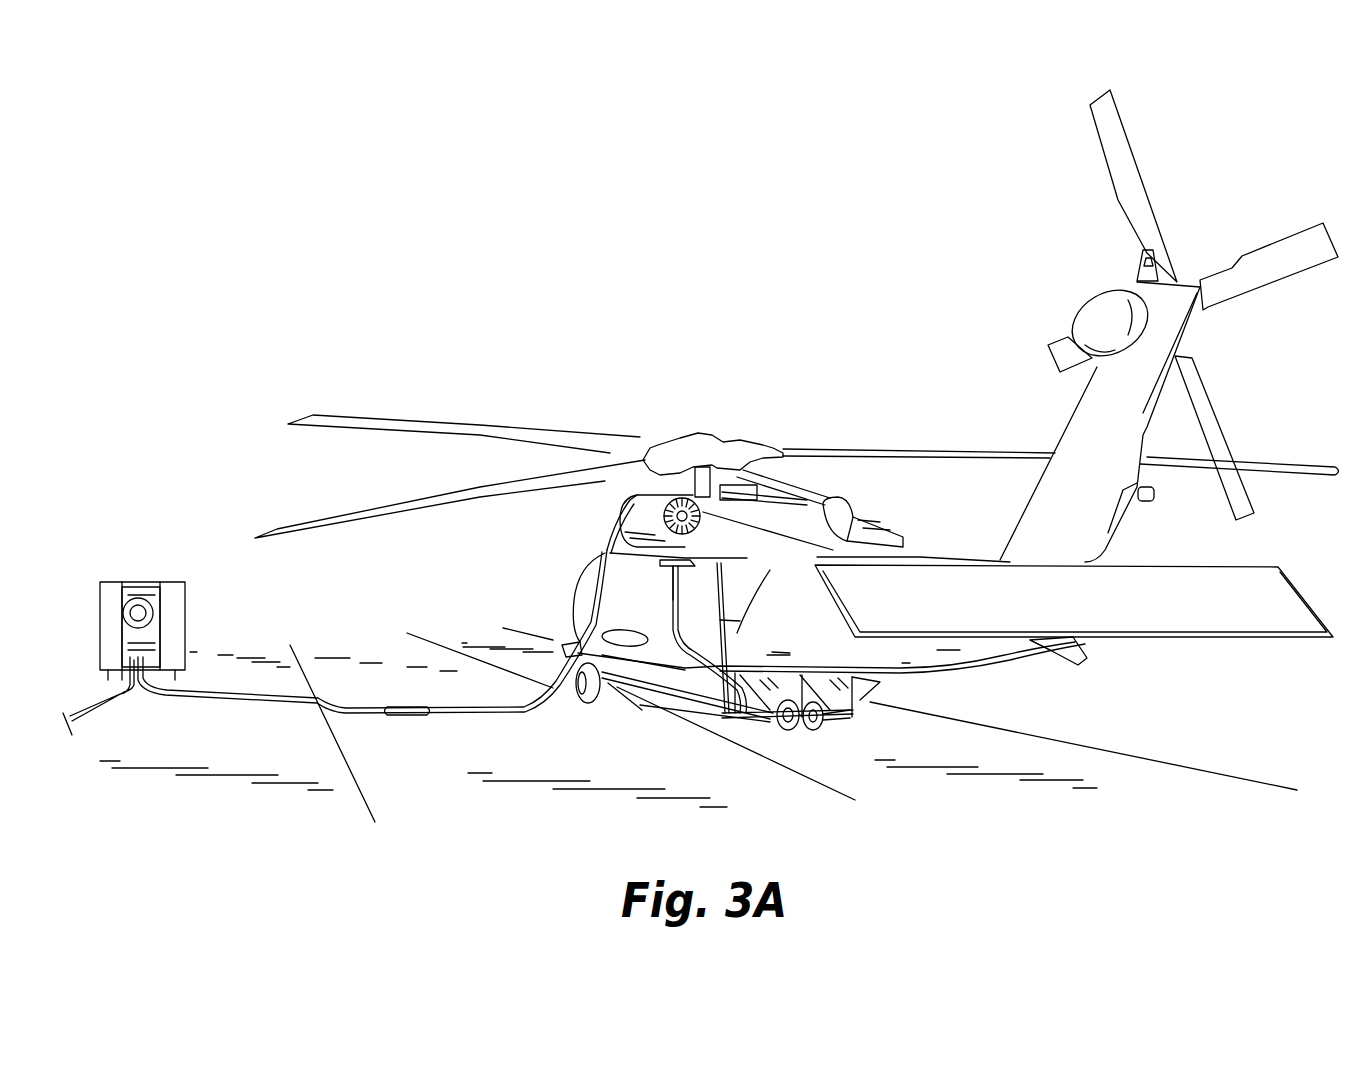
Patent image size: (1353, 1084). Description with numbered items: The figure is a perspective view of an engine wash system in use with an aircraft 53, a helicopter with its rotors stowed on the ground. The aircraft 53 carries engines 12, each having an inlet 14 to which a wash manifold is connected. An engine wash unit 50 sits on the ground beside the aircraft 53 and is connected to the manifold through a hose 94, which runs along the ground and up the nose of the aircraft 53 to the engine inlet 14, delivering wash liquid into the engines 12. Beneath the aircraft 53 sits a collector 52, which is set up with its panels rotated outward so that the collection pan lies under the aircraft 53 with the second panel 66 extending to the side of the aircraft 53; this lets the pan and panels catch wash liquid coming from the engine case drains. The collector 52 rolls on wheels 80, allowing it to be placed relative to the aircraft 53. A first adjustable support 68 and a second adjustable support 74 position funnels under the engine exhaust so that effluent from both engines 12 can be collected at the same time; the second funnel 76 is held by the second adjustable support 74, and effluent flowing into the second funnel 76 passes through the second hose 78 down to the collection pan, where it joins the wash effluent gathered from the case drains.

The aircraft 53 is at (763, 345).
The engine wash unit 50 is at (149, 547).
The engine 12 is at (648, 512).
The inlet 14 is at (617, 507).
The second funnel 76 is at (667, 572).
The second hose 78 is at (668, 613).
The second adjustable support 74 is at (744, 602).
The first adjustable support 68 is at (857, 680).
The wheels 80 is at (727, 727).
The second panel 66 is at (633, 710).
The collector 52 is at (660, 733).
The hose 94 is at (538, 703).